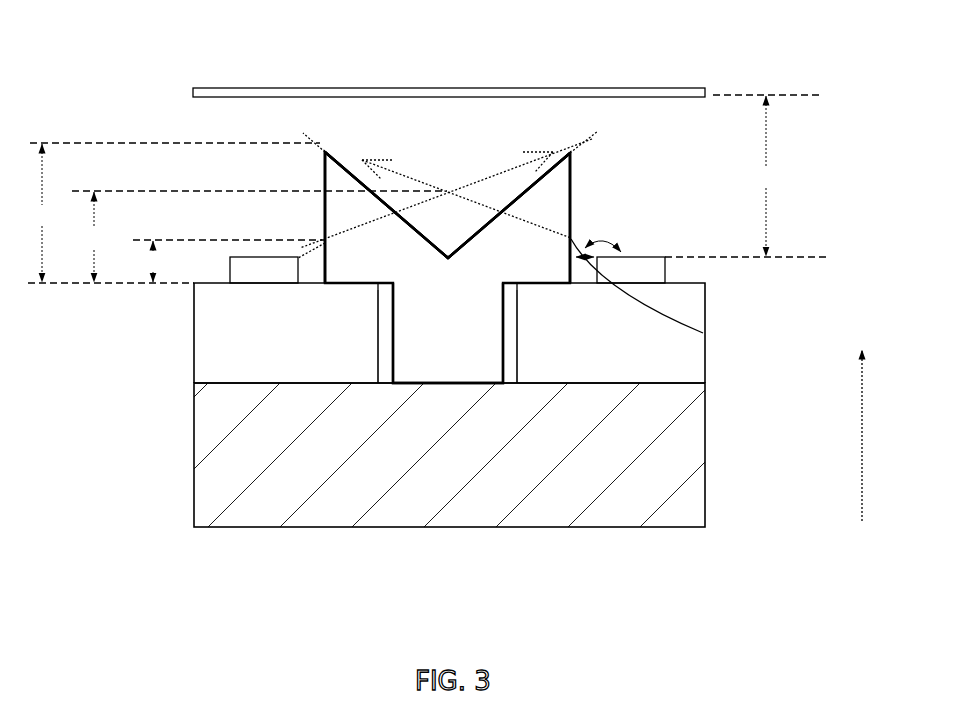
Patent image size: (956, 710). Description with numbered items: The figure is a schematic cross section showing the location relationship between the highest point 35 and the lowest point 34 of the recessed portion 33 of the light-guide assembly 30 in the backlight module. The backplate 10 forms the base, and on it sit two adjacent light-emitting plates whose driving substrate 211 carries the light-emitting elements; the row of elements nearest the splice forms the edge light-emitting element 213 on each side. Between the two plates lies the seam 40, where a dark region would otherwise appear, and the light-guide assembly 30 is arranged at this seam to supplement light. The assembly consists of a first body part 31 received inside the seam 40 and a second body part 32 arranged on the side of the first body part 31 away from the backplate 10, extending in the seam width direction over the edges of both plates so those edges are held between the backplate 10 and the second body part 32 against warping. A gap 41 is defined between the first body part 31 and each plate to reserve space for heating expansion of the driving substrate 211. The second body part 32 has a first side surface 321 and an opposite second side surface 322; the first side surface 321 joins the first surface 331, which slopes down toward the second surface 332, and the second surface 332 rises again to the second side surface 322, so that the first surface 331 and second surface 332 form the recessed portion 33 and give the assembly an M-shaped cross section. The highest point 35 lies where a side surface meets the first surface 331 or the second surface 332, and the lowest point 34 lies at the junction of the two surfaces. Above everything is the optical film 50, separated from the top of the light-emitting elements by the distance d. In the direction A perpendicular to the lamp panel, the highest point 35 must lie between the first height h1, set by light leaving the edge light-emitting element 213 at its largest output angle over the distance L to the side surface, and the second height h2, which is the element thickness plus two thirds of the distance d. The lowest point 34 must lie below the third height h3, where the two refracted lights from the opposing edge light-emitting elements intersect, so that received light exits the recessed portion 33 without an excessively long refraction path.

The backplate 10 is at (265, 503).
The driving substrate 211 is at (242, 352).
The edge light-emitting element 213 is at (637, 271).
The light-guide assembly 30 is at (458, 330).
The first body part 31 is at (432, 335).
The second body part 32 is at (489, 258).
The first side surface 321 is at (323, 220).
The second side surface 322 is at (575, 190).
The recessed portion 33 is at (425, 168).
The first surface 331 is at (345, 163).
The second surface 332 is at (522, 188).
The lowest point 34 is at (447, 240).
The highest point 35 is at (317, 142).
The seam 40 is at (518, 348).
The gap 41 is at (385, 366).
The optical film 50 is at (633, 92).
The distance between side surface of light-guide assembly and edge light-emitting el L is at (703, 333).
The distance from top surface of light-emitting element to optical film d is at (766, 176).
The first height h1 is at (154, 261).
The second height h2 is at (41, 213).
The third height h3 is at (96, 237).
The direction A is at (860, 420).